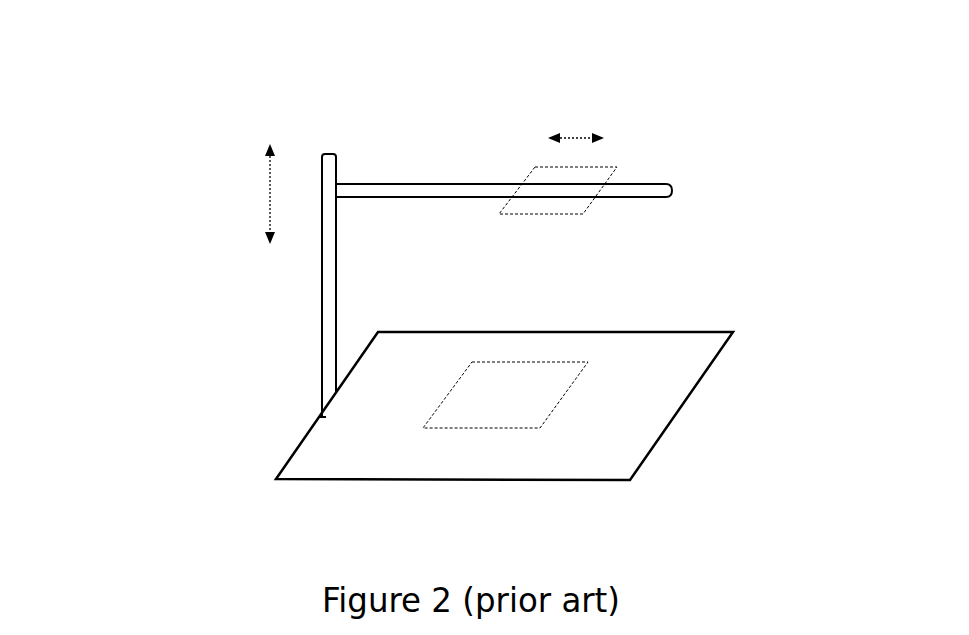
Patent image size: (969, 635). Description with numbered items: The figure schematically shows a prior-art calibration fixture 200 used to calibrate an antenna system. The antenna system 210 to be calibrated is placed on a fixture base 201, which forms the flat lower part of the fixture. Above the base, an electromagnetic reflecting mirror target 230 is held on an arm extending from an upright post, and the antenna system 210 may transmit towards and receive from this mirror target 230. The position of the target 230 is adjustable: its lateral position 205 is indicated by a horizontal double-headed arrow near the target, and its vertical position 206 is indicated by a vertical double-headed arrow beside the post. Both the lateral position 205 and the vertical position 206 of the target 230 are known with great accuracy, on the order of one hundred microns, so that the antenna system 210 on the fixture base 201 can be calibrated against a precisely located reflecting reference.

The calibration fixture 200 is at (255, 323).
The fixture base 201 is at (682, 407).
The lateral position 205 is at (565, 137).
The vertical position 206 is at (270, 197).
The antenna system 210 is at (423, 428).
The electromagnetic reflecting mirror target 230 is at (522, 185).